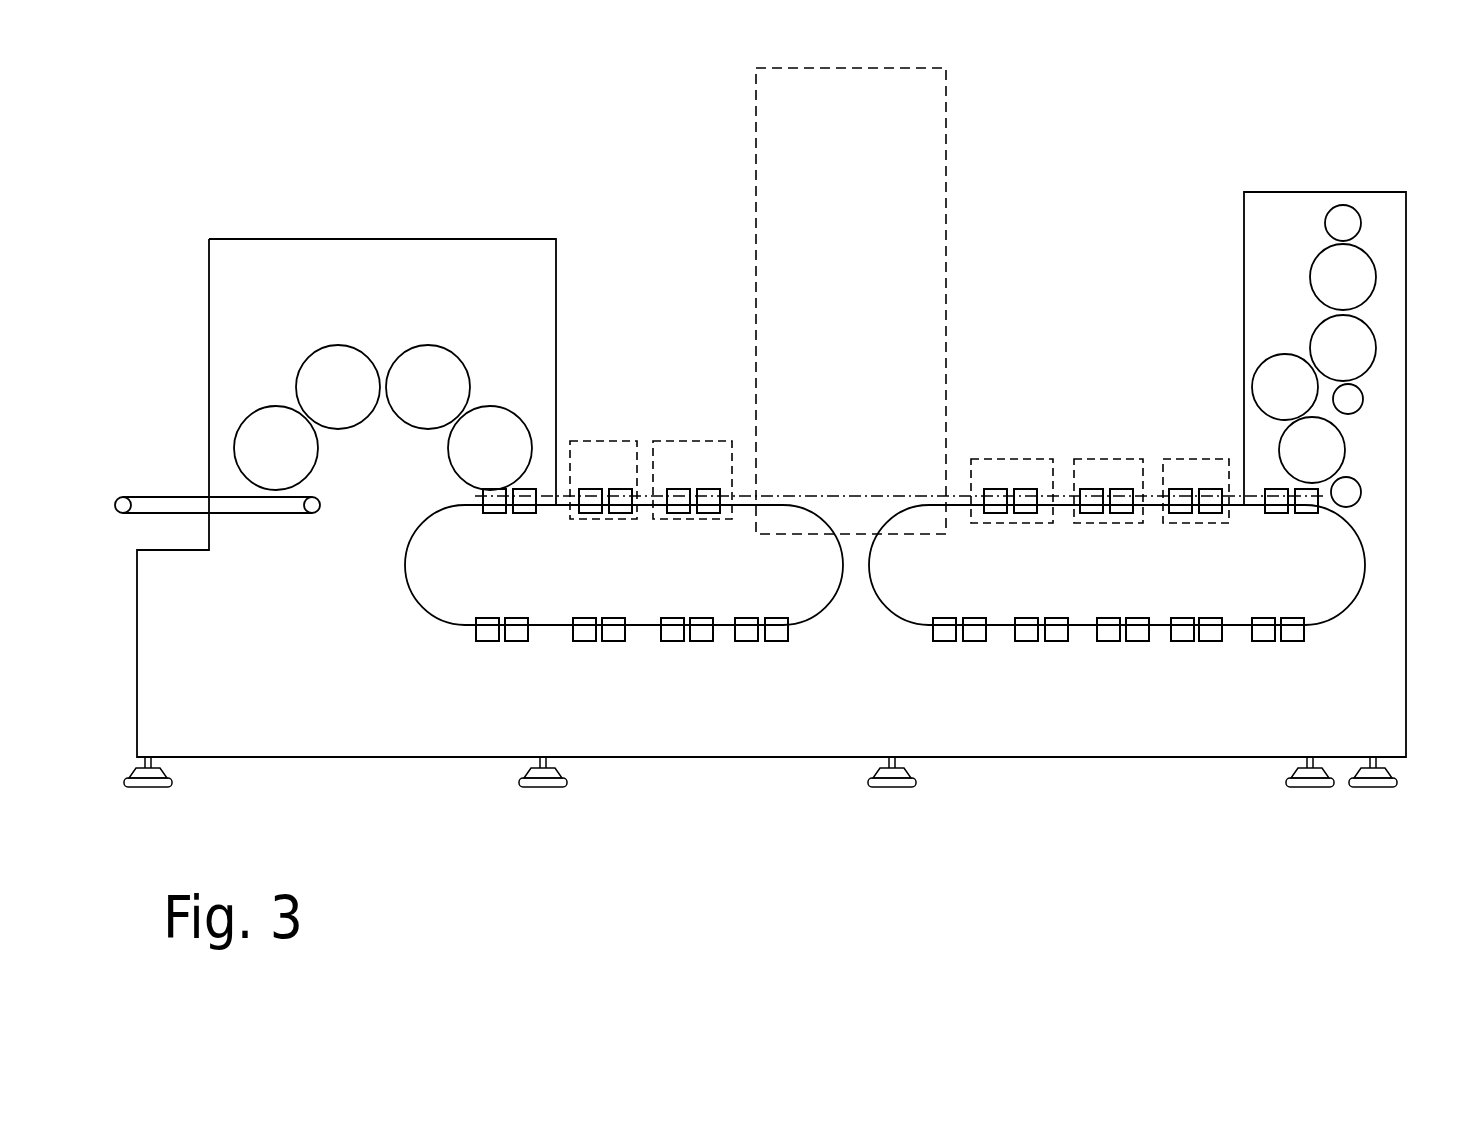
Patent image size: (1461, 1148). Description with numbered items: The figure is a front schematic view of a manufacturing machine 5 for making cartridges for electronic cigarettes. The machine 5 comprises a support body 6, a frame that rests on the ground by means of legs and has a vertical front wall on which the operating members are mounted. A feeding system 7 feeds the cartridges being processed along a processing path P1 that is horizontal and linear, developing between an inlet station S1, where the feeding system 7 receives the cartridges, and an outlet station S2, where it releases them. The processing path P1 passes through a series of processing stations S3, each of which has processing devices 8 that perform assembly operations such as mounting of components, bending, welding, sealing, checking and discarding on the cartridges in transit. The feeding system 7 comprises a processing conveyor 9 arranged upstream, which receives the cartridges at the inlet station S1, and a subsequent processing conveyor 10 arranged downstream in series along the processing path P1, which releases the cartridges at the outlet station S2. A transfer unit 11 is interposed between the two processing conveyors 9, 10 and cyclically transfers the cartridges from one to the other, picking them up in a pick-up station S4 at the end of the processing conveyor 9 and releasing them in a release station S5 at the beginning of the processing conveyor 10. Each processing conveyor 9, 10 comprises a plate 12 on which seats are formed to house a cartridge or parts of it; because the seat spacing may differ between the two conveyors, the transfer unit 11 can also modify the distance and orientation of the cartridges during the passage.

The manufacturing machine 5 is at (760, 452).
The support body 6 is at (262, 279).
The feeding system 7 is at (704, 178).
The processing devices 8 is at (601, 462).
The processing conveyor 9 is at (1030, 680).
The processing conveyor 10 is at (645, 655).
The transfer unit 11 is at (900, 123).
The plate 12 is at (485, 630).
The inlet station S1 is at (1278, 480).
The outlet station S2 is at (462, 492).
The processing station S3 is at (647, 383).
The pick-up station S4 is at (925, 492).
The release station S5 is at (779, 492).
The processing path P1 is at (1322, 498).